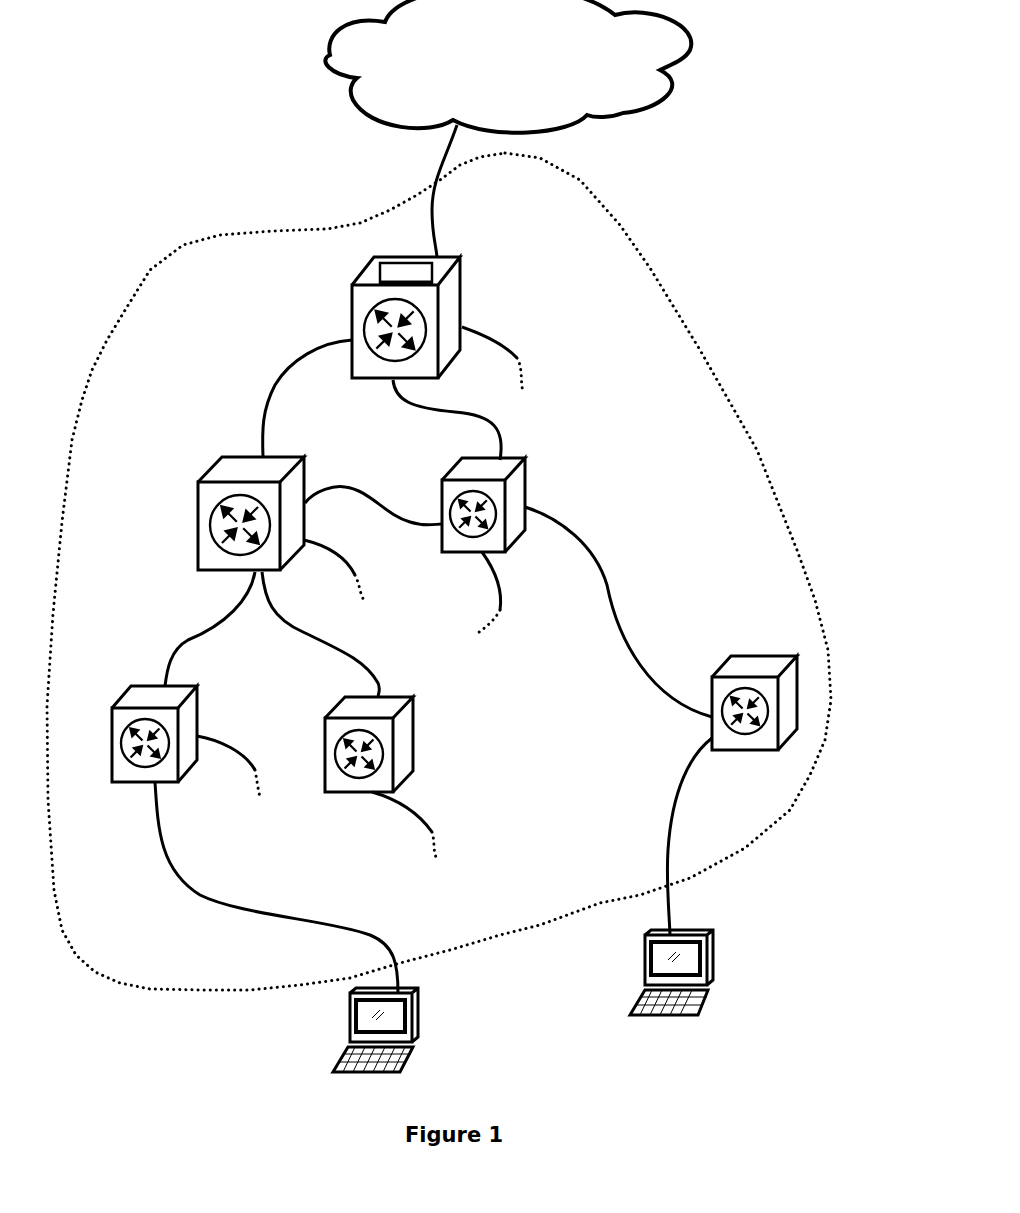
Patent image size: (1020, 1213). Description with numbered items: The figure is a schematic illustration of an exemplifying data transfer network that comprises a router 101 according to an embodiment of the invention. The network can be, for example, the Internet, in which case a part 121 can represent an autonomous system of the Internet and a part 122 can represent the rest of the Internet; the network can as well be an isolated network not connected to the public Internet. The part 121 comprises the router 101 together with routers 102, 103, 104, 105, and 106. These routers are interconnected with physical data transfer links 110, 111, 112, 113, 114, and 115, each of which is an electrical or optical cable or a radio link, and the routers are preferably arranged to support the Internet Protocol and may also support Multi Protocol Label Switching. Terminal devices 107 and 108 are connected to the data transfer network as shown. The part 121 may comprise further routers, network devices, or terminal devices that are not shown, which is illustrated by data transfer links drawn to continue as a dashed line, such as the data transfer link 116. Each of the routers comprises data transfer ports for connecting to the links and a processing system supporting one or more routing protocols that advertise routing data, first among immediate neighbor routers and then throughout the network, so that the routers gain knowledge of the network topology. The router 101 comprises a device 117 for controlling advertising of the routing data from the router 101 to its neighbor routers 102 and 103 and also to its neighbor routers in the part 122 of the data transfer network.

The router 101 is at (352, 312).
The router 102 is at (198, 560).
The router 103 is at (462, 553).
The router 104 is at (130, 783).
The router 105 is at (340, 793).
The router 106 is at (745, 657).
The terminal device 107 is at (412, 1010).
The terminal device 108 is at (645, 962).
The physical data transfer link 110 is at (272, 380).
The physical data transfer link 111 is at (507, 430).
The physical data transfer link 112 is at (360, 488).
The physical data transfer link 113 is at (168, 660).
The physical data transfer link 114 is at (303, 632).
The physical data transfer link 115 is at (598, 545).
The data transfer link 116 is at (518, 352).
The device for controlling advertising of routing data 117 is at (438, 272).
The part of the data transfer network 121 is at (650, 268).
The part of the data transfer network 122 is at (508, 66).